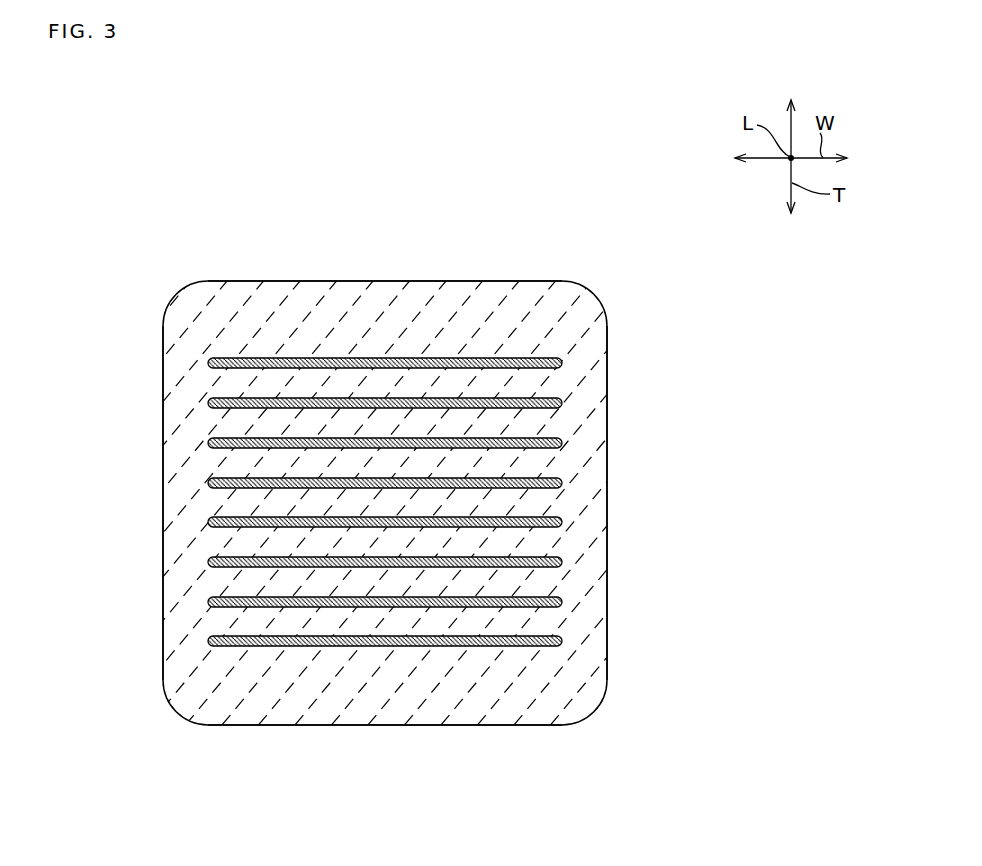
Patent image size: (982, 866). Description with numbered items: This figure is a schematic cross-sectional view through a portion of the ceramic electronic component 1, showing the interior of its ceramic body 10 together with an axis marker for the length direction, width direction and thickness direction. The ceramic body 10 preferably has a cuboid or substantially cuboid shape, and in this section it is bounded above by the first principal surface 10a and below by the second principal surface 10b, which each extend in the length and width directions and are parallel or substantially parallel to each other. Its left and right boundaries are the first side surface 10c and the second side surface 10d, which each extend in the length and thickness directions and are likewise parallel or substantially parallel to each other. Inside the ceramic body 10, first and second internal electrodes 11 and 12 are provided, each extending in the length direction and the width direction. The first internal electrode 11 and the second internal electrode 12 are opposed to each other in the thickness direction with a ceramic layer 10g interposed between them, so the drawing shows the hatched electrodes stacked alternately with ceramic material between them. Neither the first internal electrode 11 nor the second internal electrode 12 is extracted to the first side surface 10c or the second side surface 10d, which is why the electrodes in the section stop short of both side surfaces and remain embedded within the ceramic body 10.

The ceramic electronic component 1 is at (478, 493).
The ceramic body 10 is at (478, 500).
The first principal surface 10a is at (417, 280).
The second principal surface 10b is at (378, 726).
The first side surface 10c is at (163, 513).
The second side surface 10d is at (607, 503).
The ceramic layer 10g is at (487, 622).
The first internal electrode 11 is at (340, 355).
The second internal electrode 12 is at (309, 652).